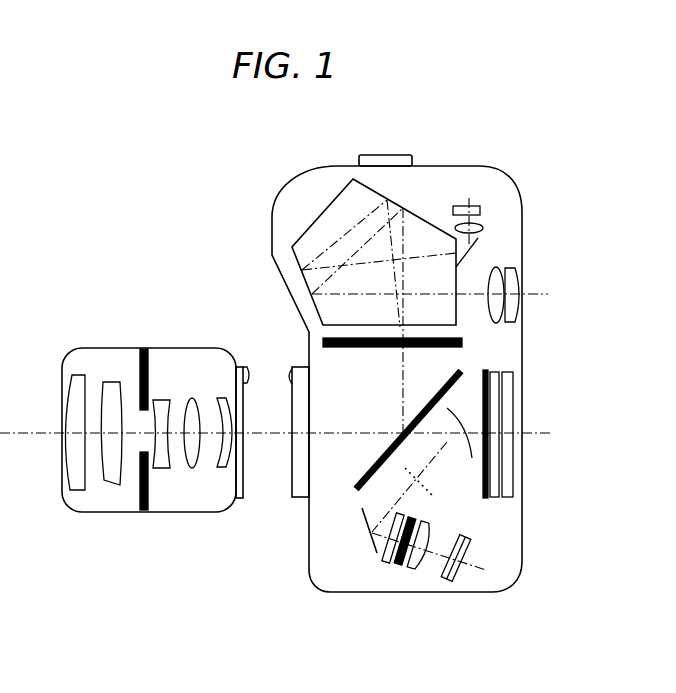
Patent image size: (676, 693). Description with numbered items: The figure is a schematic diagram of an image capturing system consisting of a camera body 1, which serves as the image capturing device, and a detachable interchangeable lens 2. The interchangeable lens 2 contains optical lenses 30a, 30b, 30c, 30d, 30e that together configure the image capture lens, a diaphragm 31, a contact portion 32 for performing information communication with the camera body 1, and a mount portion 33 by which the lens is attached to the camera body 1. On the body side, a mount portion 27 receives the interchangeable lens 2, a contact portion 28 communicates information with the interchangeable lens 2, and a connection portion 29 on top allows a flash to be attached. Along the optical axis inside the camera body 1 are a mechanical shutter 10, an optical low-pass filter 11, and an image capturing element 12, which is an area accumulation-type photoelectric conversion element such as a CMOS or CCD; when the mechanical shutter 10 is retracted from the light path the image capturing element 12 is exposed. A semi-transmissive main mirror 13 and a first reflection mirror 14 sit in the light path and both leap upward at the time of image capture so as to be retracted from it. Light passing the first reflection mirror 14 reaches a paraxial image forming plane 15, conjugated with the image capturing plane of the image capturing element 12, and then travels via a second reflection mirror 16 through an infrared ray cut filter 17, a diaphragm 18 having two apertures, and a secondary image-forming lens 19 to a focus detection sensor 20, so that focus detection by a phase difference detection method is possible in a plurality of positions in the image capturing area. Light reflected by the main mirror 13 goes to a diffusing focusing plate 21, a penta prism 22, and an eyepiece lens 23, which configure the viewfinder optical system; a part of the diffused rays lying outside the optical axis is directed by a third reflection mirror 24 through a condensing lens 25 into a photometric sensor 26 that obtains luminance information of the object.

The camera body 1 is at (270, 215).
The interchangeable lens 2 is at (89, 348).
The mechanical shutter 10 is at (486, 375).
The optical low-pass filter 11 is at (493, 448).
The image capturing element 12 is at (507, 470).
The main mirror 13 is at (461, 373).
The first reflection mirror 14 is at (466, 419).
The paraxial image forming plane 15 is at (428, 490).
The second reflection mirror 16 is at (363, 517).
The infrared ray cut filter 17 is at (387, 558).
The diaphragm 18 is at (398, 562).
The secondary image-forming lens 19 is at (412, 563).
The focus detection sensor 20 is at (467, 558).
The focusing plate 21 is at (326, 350).
The penta prism 22 is at (310, 240).
The eyepiece lens 23 is at (513, 285).
The third reflection mirror 24 is at (478, 243).
The condensing lens 25 is at (483, 228).
The photometric sensor 26 is at (460, 205).
The mount portion 27 is at (292, 497).
The contact portion 28 is at (290, 378).
The connection portion 29 is at (358, 155).
The optical lens 30a is at (73, 465).
The optical lens 30b is at (110, 477).
The optical lens 30c is at (165, 463).
The optical lens 30d is at (187, 457).
The optical lens 30e is at (222, 463).
The diaphragm 31 is at (143, 348).
The contact portion 32 is at (248, 375).
The mount portion 33 is at (245, 498).